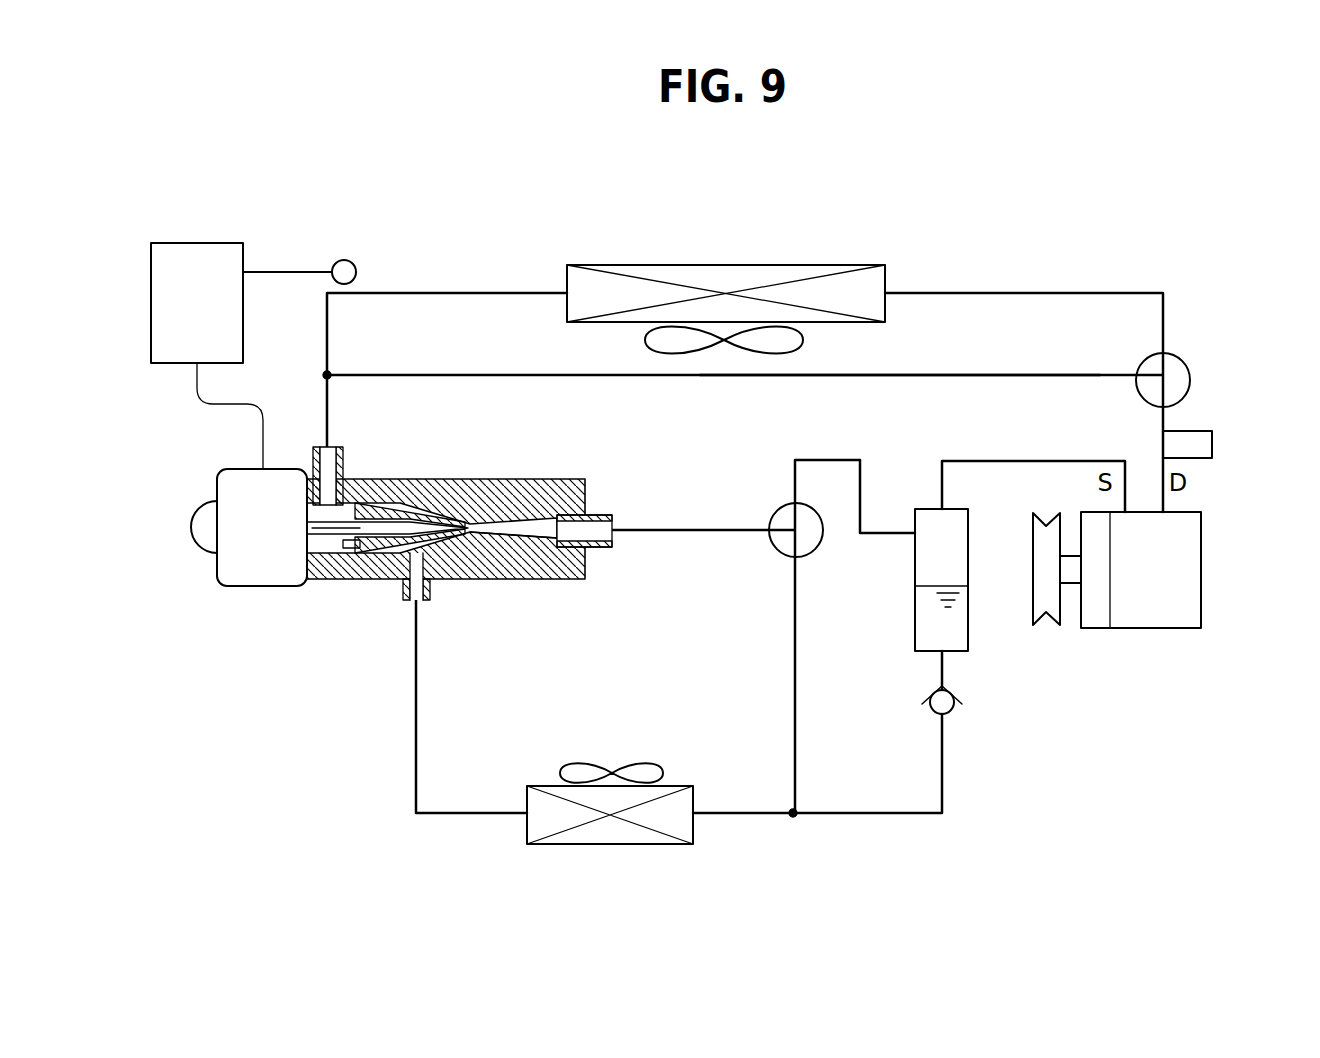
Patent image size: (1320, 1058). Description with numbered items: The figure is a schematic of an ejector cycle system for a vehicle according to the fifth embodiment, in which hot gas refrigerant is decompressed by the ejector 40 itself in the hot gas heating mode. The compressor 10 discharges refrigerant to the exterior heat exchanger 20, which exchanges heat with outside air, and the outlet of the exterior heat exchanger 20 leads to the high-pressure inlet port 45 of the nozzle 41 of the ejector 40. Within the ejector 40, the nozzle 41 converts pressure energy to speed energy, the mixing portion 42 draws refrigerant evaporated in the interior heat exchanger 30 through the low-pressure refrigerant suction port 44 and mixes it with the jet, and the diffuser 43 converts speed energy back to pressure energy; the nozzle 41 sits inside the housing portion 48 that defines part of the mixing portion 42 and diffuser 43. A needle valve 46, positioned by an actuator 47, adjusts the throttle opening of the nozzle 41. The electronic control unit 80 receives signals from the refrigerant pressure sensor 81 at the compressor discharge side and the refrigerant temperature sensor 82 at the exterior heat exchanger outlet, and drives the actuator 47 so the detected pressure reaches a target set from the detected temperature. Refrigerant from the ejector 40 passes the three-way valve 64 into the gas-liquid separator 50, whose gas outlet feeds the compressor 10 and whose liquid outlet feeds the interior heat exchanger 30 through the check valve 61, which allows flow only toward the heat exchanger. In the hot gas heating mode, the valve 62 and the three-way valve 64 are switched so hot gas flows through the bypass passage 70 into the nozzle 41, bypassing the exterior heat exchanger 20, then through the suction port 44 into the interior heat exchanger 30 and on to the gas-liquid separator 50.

The compressor 10 is at (1201, 520).
The exterior heat exchanger 20 is at (784, 265).
The interior heat exchanger 30 is at (677, 786).
The ejector 40 is at (503, 479).
The nozzle 41 is at (430, 490).
The mixing portion 42 is at (485, 520).
The diffuser 43 is at (548, 520).
The low-pressure refrigerant suction port 44 is at (412, 600).
The high-pressure inlet port 45 is at (348, 552).
The needle valve 46 is at (338, 540).
The actuator 47 is at (237, 590).
The housing portion 48 is at (555, 575).
The gas-liquid separator 50 is at (968, 522).
The check valve 61 is at (958, 698).
The valve 62 is at (1183, 360).
The three-way valve 64 is at (775, 512).
The bypass passage 70 is at (945, 375).
The electronic control unit 80 is at (205, 243).
The refrigerant pressure sensor 81 is at (1200, 431).
The refrigerant temperature sensor 82 is at (349, 260).